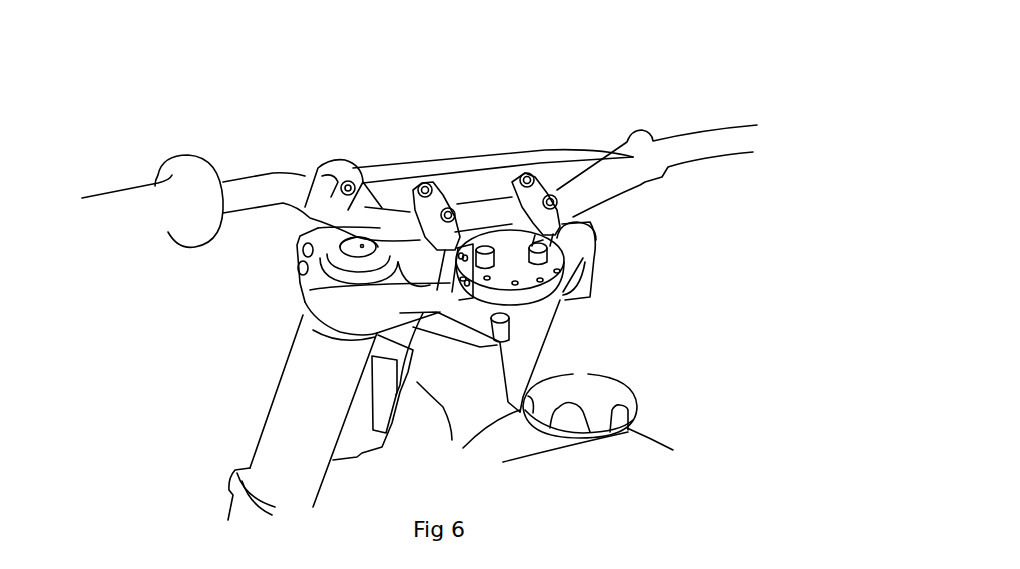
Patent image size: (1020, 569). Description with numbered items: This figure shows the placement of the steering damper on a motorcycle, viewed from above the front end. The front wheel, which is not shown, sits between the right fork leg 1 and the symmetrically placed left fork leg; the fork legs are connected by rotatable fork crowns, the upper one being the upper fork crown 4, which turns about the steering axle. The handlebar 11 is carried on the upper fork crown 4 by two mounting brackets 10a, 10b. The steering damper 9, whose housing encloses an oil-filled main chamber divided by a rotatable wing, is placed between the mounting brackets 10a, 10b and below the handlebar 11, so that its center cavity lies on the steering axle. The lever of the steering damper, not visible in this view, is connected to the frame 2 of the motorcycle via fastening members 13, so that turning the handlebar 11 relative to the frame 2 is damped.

The right fork leg 1 is at (320, 372).
The frame 2 is at (475, 404).
The upper part (upper fork crown) 4 is at (323, 287).
The steering damper 9 is at (587, 260).
The mounting bracket 10a is at (405, 193).
The mounting bracket 10b is at (513, 172).
The handlebar 11 is at (633, 157).
The fastening members 13 is at (510, 322).